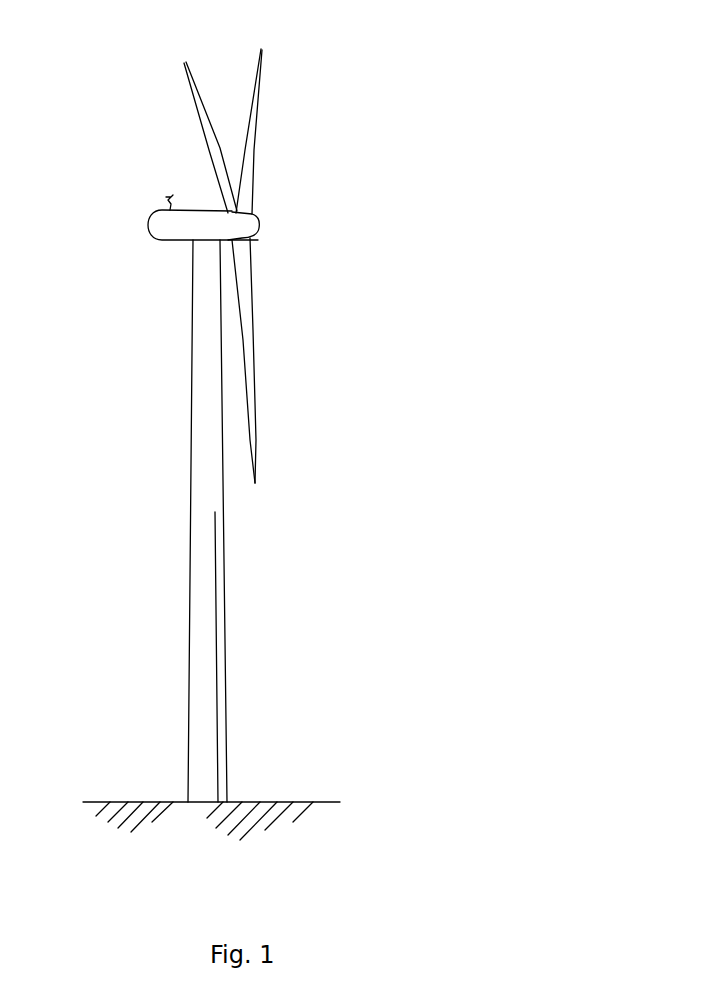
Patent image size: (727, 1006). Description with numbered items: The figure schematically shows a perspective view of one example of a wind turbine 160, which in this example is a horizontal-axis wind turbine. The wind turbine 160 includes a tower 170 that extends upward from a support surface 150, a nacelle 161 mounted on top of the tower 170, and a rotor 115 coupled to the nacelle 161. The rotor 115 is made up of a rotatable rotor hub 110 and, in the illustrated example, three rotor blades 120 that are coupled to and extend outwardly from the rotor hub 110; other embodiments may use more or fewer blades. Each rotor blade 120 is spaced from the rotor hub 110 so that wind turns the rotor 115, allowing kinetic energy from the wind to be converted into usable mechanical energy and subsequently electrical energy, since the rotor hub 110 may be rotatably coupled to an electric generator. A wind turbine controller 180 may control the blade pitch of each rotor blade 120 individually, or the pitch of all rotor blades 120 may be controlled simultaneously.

The rotor hub 110 is at (257, 232).
The rotor 115 is at (263, 204).
The rotor blade 120 is at (254, 78).
The support surface 150 is at (140, 801).
The wind turbine 160 is at (340, 104).
The nacelle 161 is at (180, 243).
The tower 170 is at (200, 598).
The wind turbine controller 180 is at (200, 231).